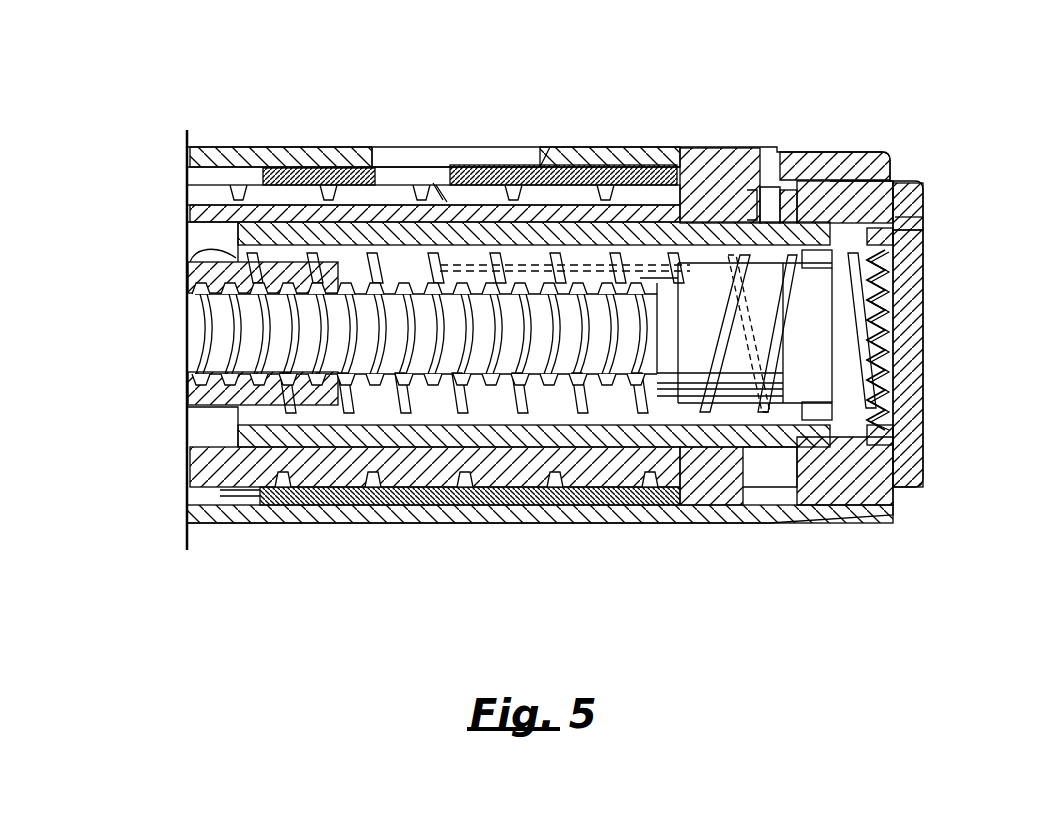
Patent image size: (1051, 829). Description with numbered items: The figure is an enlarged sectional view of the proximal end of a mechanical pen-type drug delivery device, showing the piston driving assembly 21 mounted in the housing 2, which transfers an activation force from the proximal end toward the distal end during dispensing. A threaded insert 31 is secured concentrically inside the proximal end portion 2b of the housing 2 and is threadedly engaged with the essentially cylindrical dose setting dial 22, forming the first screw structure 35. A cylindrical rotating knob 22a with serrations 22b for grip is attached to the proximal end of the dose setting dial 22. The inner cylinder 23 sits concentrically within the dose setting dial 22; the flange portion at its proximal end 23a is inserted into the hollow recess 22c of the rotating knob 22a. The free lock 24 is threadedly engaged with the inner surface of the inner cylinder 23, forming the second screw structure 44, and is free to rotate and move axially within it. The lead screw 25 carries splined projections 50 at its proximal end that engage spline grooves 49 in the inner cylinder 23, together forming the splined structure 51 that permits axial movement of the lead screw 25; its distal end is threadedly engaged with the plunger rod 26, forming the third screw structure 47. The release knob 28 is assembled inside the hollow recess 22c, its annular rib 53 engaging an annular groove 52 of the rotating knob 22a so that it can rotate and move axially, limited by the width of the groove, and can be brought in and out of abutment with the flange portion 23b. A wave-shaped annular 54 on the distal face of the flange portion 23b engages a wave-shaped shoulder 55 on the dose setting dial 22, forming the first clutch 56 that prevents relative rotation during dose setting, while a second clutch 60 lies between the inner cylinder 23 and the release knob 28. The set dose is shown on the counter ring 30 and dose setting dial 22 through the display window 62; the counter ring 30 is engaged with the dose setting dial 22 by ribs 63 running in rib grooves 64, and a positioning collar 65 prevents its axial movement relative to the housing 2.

The housing 2 is at (217, 147).
The proximal end portion of the housing 2b is at (625, 165).
The piston driving assembly 21 is at (433, 411).
The dose setting dial 22 is at (387, 203).
The rotating knob 22a is at (800, 187).
The serrations 22b is at (838, 165).
The hollow recess 22c is at (779, 190).
The inner cylinder 23 is at (573, 222).
The proximal end of the inner cylinder 23a is at (923, 221).
The flange portion 23b is at (761, 187).
The free lock 24 is at (697, 277).
The lead screw 25 is at (483, 395).
The plunger rod 26 is at (212, 256).
The release knob 28 is at (905, 392).
The counter ring 30 is at (466, 160).
The threaded insert 31 is at (648, 165).
The first screw structure 35 is at (633, 518).
The second screw structure 44 is at (688, 447).
The third screw structure 47 is at (243, 448).
The spline grooves 49 is at (888, 268).
The splined projections 50 is at (888, 300).
The splined structure 51 is at (978, 248).
The annular groove 52 is at (852, 165).
The annular rib 53 is at (880, 186).
The wave-shaped annular 54 is at (773, 487).
The wave-shaped shoulder 55 is at (732, 447).
The first clutch 56 is at (800, 590).
The second clutch 60 is at (893, 358).
The display window 62 is at (516, 160).
The ribs 63 is at (483, 162).
The rib grooves 64 is at (438, 195).
The positioning collar 65 is at (298, 167).